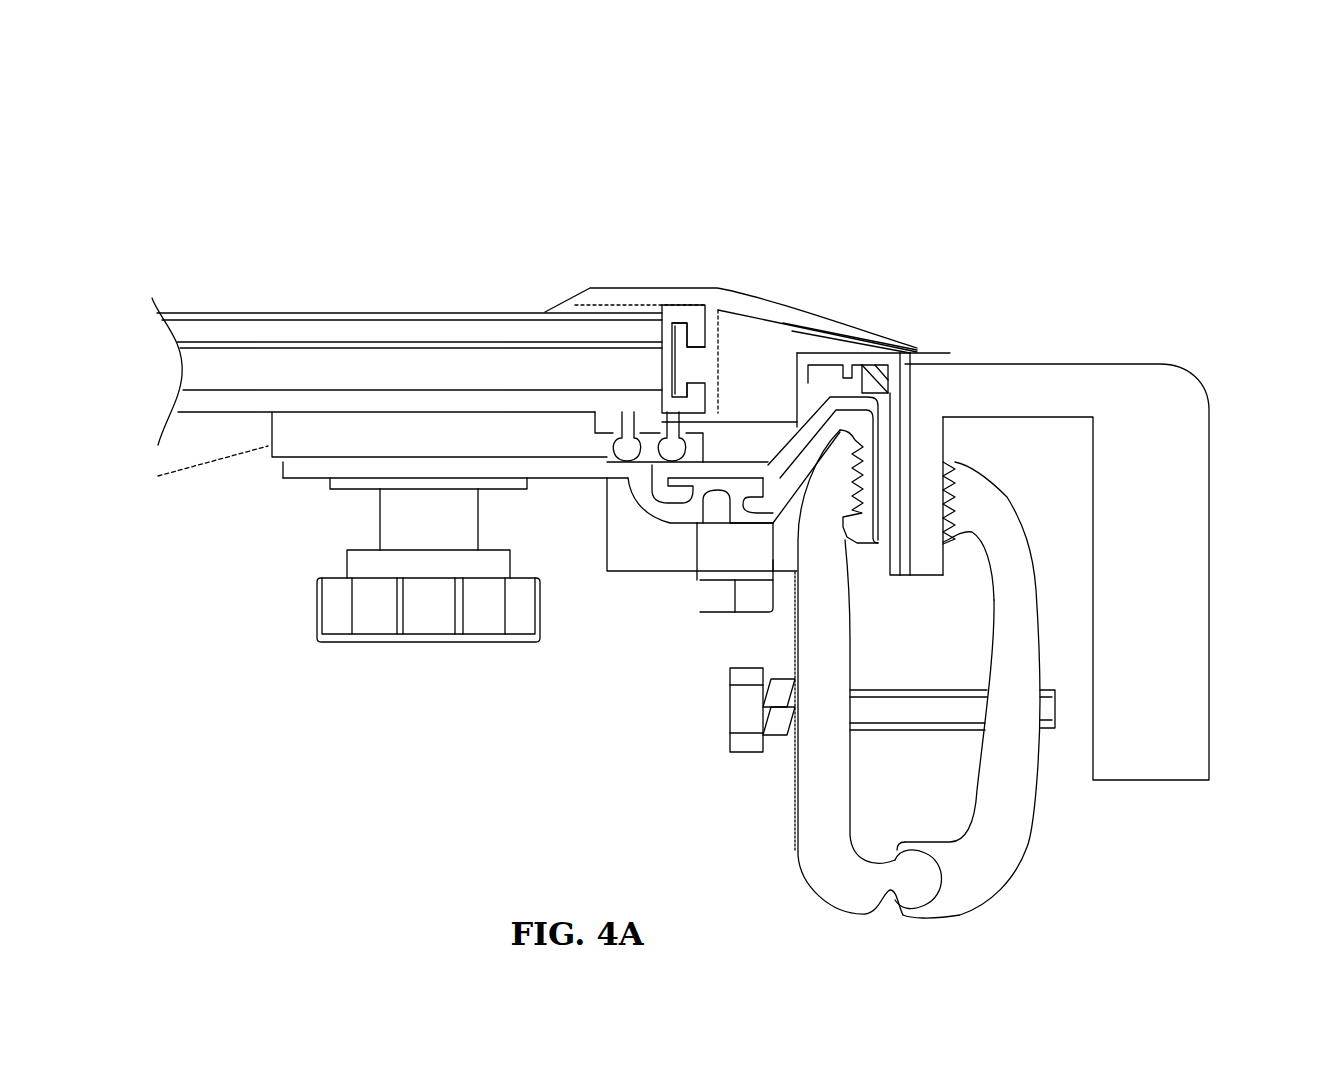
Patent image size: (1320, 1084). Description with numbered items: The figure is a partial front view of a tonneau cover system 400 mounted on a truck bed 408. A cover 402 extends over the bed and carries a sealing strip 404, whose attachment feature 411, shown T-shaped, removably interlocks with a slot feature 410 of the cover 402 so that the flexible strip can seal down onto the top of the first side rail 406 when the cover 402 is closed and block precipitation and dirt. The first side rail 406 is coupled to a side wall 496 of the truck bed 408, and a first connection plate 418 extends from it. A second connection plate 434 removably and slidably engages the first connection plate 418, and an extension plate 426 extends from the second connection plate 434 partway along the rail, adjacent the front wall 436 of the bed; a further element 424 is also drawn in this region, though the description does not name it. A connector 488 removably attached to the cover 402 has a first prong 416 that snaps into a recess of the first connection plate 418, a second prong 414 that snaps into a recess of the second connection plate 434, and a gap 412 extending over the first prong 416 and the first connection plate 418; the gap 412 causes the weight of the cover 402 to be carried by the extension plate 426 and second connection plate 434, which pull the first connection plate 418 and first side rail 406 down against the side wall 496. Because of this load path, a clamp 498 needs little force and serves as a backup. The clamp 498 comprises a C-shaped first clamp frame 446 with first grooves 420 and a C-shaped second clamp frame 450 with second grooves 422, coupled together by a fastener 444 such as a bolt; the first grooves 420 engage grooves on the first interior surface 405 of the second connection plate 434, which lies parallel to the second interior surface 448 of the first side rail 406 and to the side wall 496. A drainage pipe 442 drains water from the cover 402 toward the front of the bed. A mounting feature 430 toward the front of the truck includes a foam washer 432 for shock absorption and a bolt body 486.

The tonneau cover system 400 is at (1137, 168).
The cover 402 is at (185, 305).
The sealing strip 404 is at (625, 278).
The first interior surface 405 is at (888, 425).
The first side rail 406 is at (985, 335).
The truck bed 408 is at (1197, 385).
The slot feature 410 is at (749, 361).
The attachment feature 411 is at (688, 370).
The gap 412 is at (723, 453).
The second prong 414 is at (625, 440).
The first prong 416 is at (668, 440).
The first connection plate 418 is at (723, 472).
The first grooves 420 is at (866, 468).
The second grooves 422 is at (928, 475).
The base plate 424 is at (268, 449).
The extension plate 426 is at (300, 465).
The mounting feature 430 is at (320, 600).
The foam washer 432 is at (415, 485).
The second connection plate 434 is at (733, 523).
The front wall 436 is at (625, 548).
The drainage pipe 442 is at (723, 592).
The fastener 444 is at (747, 730).
The first clamp frame 446 is at (790, 820).
The second interior surface 448 is at (893, 580).
The second clamp frame 450 is at (1033, 800).
The bolt body 486 is at (350, 520).
The connector 488 is at (607, 423).
The side wall 496 is at (927, 477).
The clamp 498 is at (850, 873).